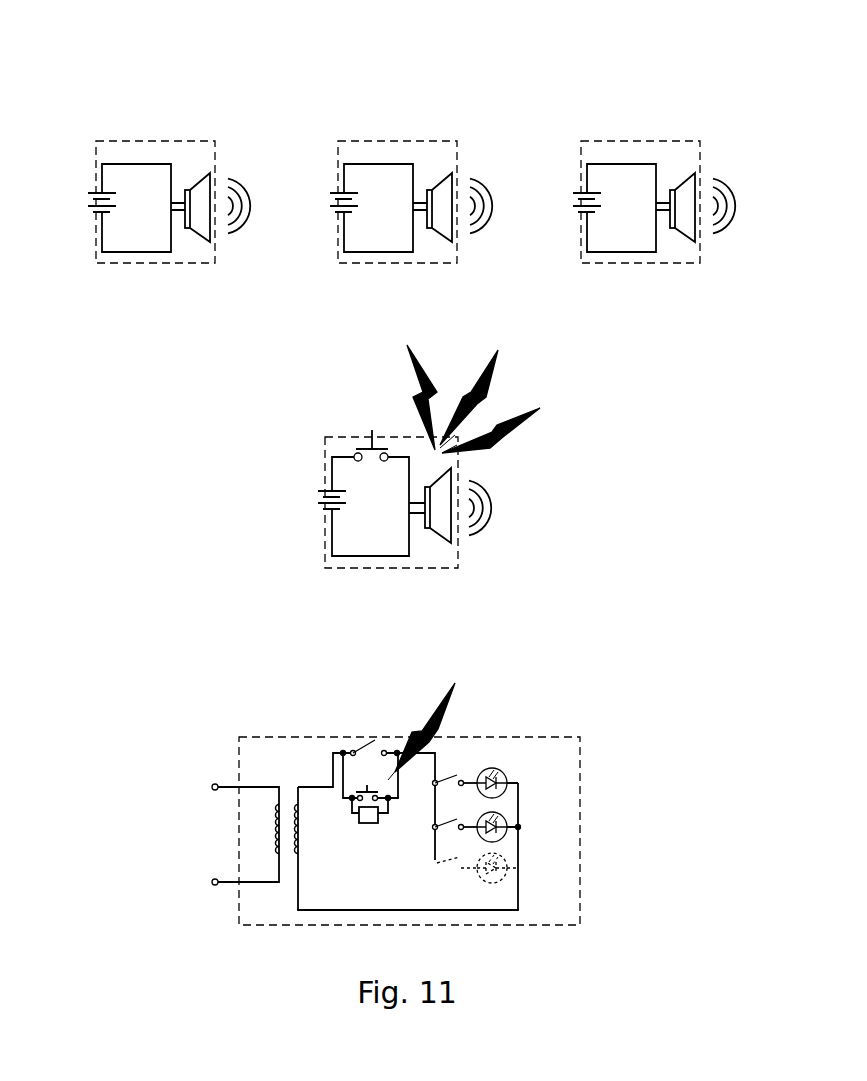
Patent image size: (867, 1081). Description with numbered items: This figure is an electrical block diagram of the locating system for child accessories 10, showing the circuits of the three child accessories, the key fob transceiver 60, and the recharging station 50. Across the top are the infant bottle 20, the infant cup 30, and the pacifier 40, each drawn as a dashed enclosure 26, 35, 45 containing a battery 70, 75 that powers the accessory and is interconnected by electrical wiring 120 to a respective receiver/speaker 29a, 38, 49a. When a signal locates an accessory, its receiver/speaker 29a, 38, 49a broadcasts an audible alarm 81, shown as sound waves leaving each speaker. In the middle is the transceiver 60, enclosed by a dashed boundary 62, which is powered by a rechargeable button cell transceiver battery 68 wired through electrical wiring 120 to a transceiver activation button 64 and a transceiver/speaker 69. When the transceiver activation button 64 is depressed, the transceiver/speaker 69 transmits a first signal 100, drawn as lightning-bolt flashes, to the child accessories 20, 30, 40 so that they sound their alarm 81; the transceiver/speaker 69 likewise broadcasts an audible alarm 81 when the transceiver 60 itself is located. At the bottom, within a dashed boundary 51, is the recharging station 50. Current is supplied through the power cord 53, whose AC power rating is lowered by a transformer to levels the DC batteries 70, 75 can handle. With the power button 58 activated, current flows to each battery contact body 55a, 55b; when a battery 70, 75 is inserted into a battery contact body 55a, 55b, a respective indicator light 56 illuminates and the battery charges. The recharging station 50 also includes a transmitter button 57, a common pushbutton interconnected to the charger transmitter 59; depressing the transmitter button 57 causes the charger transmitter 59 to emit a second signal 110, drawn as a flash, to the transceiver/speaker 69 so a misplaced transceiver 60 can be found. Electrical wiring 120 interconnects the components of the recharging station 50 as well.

The locating system for child accessories 10 is at (81, 71).
The infant bottle 20 is at (93, 293).
The first housing 26 is at (160, 140).
The receiver/speaker 29a is at (199, 223).
The infant cup 30 is at (336, 292).
The second housing 35 is at (403, 140).
The receiver/speaker 38 is at (443, 223).
The pacifier 40 is at (579, 292).
The third housing 45 is at (646, 140).
The receiver/speaker 49a is at (684, 223).
The recharging station 50 is at (610, 703).
The lighting circuit housing 51 is at (277, 737).
The power cord 53 is at (232, 791).
The battery contact body 55a is at (438, 863).
The battery contact body 55b is at (445, 860).
The indicator light 56 is at (508, 860).
The transmitter button 57 is at (365, 788).
The power button 58 is at (363, 742).
The charger transmitter 59 is at (370, 823).
The key fob transceiver 60 is at (315, 593).
The fourth housing 62 is at (380, 568).
The transceiver activation button 64 is at (355, 454).
The transceiver battery 68 is at (322, 508).
The transceiver/speaker 69 is at (443, 527).
The battery 70 is at (93, 212).
The battery 75 is at (579, 212).
The audible alarm 81 is at (238, 188).
The first signal 100 is at (513, 425).
The second signal 110 is at (445, 707).
The electrical wiring 120 is at (148, 253).